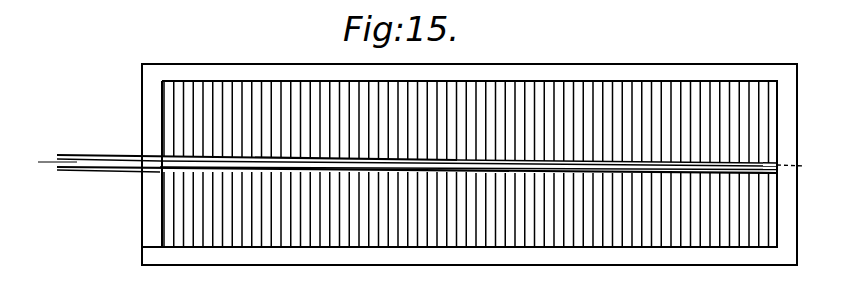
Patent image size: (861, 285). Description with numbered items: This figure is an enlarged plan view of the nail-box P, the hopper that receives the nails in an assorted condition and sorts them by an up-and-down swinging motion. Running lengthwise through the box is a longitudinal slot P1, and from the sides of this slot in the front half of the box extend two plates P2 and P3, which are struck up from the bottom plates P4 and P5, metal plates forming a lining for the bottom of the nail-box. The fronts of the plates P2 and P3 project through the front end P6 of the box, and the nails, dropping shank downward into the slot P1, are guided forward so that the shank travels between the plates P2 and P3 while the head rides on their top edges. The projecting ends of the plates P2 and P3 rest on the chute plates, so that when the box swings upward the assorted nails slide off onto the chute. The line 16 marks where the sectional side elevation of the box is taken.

The nail-box P is at (622, 67).
The longitudinal slot P1 is at (571, 177).
The plate P2 is at (121, 149).
The plate P3 is at (118, 171).
The bottom plate P4 is at (469, 74).
The bottom plate P5 is at (391, 248).
The front end P6 is at (143, 228).
The section line 16 is at (35, 162).